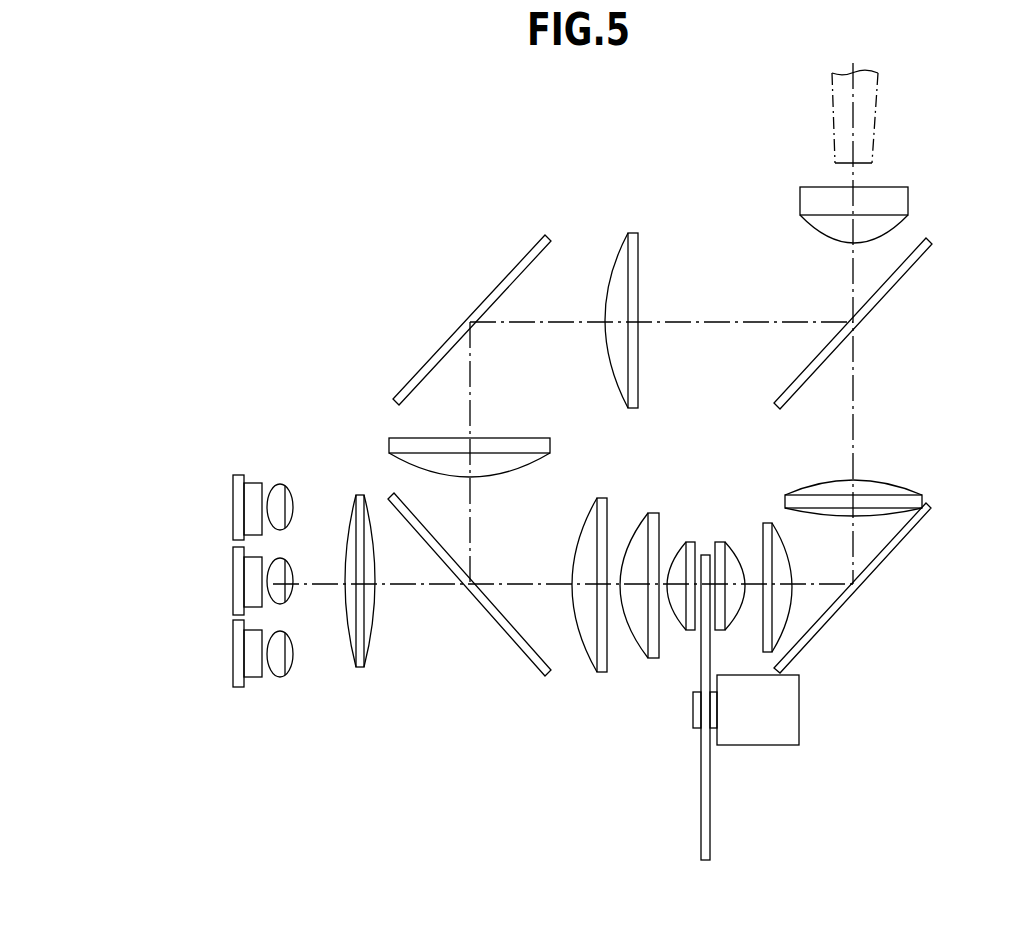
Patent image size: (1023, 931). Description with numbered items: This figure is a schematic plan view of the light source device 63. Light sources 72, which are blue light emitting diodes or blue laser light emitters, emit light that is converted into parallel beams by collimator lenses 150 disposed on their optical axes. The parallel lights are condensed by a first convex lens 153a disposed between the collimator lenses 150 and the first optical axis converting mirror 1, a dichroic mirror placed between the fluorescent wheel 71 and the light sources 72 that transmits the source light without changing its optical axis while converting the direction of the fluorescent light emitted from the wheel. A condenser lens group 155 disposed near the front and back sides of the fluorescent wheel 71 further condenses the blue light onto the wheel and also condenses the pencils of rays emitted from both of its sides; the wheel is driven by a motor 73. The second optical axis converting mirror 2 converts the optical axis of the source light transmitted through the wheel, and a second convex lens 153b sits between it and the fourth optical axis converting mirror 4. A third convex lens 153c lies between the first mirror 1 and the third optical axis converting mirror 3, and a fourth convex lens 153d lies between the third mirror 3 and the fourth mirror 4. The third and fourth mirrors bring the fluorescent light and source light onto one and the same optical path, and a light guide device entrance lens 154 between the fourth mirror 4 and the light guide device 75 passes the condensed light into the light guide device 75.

The light source device 63 is at (283, 226).
The light guide device 75 is at (867, 129).
The light guide device entrance lens 154 is at (898, 202).
The fourth optical axis converting mirror 4 is at (890, 290).
The third optical axis converting mirror 3 is at (512, 268).
The fourth convex lens 153d is at (633, 258).
The third convex lens 153c is at (405, 445).
The second convex lens 153b is at (893, 500).
The second optical axis converting mirror 2 is at (893, 545).
The first optical axis converting mirror 1 is at (500, 625).
The first convex lens 153a is at (360, 627).
The condenser lens group 155 is at (739, 530).
The fluorescent wheel 71 is at (722, 818).
The drive motor 73 is at (773, 710).
The light sources 72 is at (250, 650).
The collimator lenses 150 is at (280, 497).